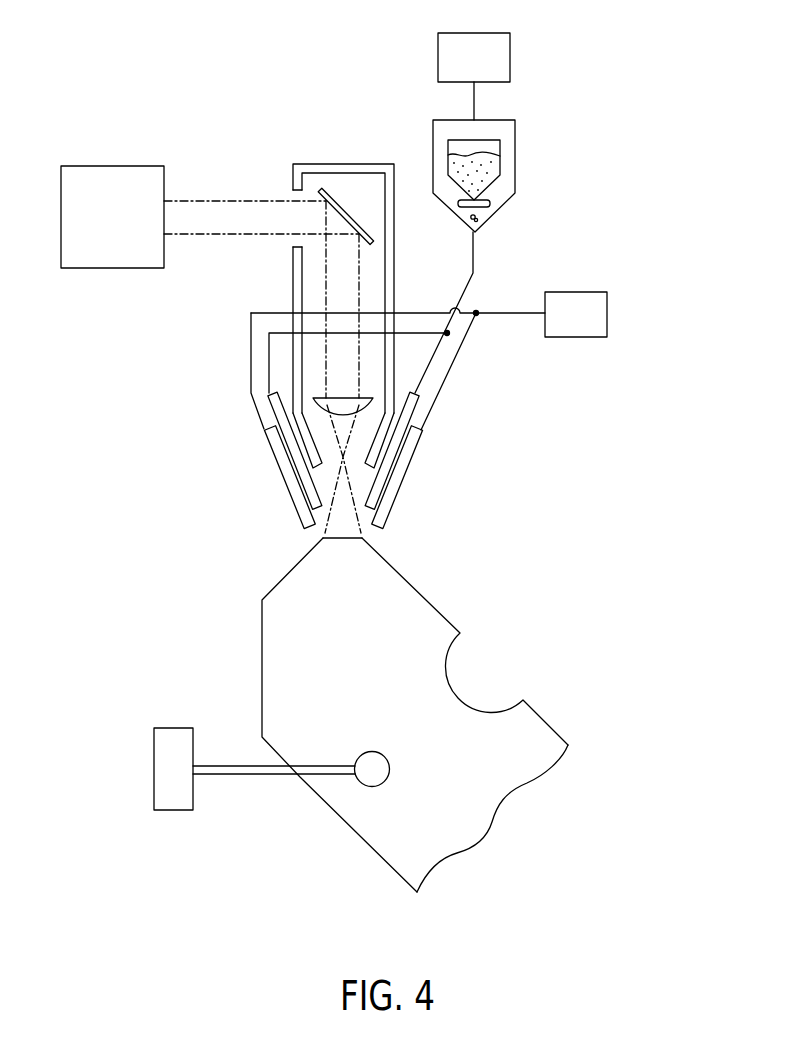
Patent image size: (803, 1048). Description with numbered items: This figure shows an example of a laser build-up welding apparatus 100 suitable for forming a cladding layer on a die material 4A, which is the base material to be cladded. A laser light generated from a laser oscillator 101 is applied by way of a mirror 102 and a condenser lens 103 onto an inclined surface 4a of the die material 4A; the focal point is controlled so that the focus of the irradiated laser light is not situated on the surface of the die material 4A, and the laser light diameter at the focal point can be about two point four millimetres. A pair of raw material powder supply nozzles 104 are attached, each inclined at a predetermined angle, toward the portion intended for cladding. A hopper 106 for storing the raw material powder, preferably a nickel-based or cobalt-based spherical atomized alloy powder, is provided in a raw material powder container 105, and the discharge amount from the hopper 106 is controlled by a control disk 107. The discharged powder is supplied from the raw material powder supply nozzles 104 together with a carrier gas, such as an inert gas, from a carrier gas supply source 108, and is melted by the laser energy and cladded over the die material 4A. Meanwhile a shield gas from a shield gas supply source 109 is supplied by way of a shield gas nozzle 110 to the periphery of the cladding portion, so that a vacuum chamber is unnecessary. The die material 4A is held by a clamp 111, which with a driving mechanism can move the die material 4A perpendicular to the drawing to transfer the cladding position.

The processing apparatus 100 is at (175, 377).
The laser oscillator 101 is at (113, 168).
The mirror 102 is at (345, 207).
The condenser lens 103 is at (337, 405).
The raw material powder supply nozzle 104 is at (275, 410).
The raw material powder container 105 is at (517, 140).
The hopper 106 is at (487, 167).
The control disk 107 is at (508, 205).
The carrier gas supply source 108 is at (510, 58).
The shield gas supply source 109 is at (610, 318).
The shield gas nozzle 110 is at (290, 494).
The clamp 111 is at (162, 770).
The die material 4A is at (420, 623).
The inclined surface 4a is at (362, 528).